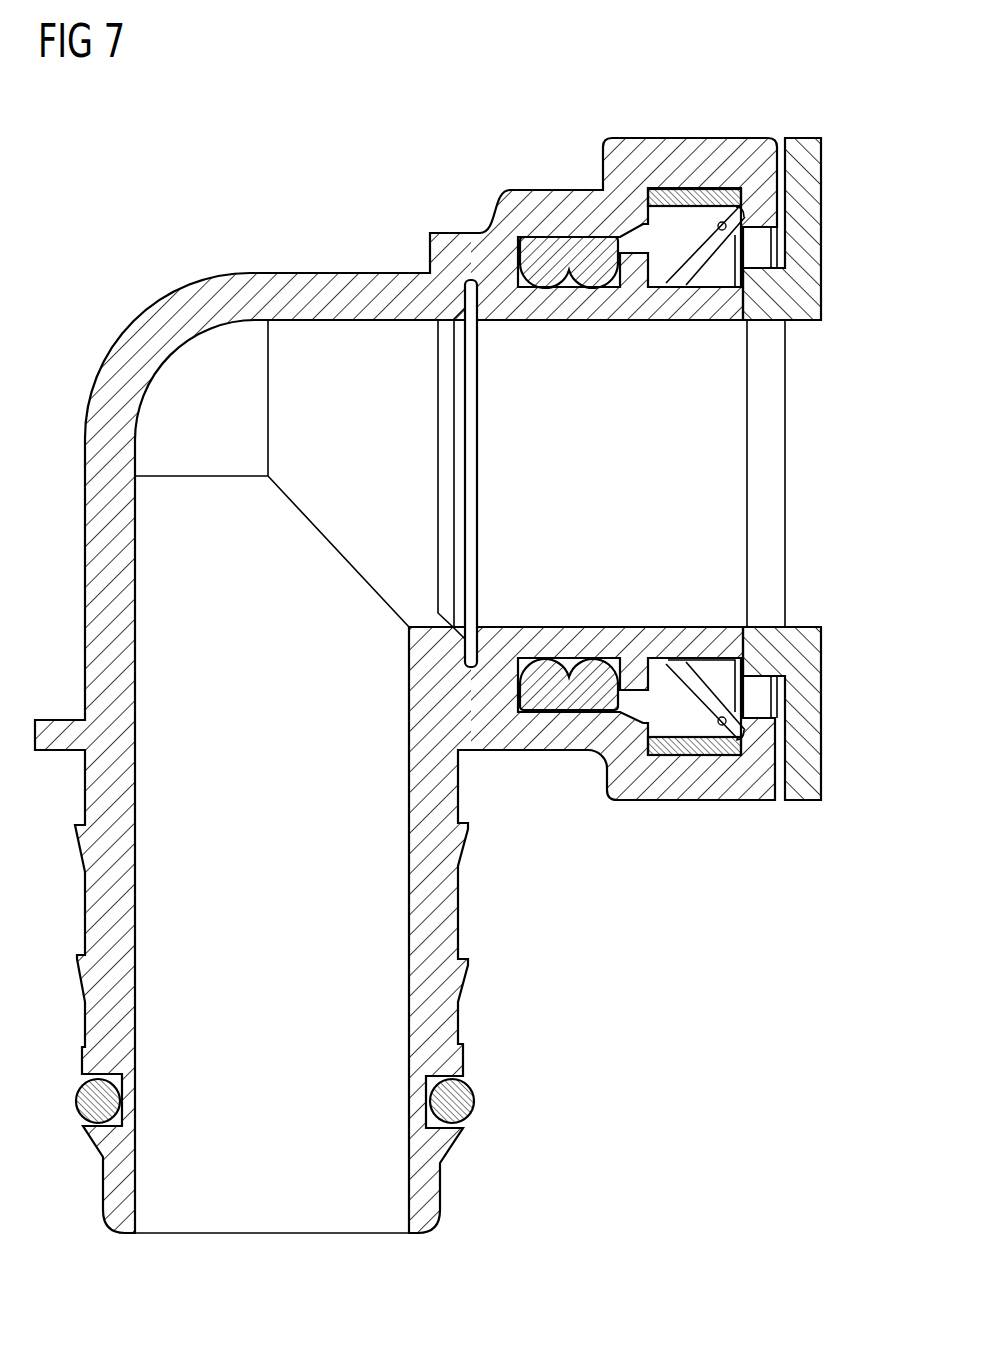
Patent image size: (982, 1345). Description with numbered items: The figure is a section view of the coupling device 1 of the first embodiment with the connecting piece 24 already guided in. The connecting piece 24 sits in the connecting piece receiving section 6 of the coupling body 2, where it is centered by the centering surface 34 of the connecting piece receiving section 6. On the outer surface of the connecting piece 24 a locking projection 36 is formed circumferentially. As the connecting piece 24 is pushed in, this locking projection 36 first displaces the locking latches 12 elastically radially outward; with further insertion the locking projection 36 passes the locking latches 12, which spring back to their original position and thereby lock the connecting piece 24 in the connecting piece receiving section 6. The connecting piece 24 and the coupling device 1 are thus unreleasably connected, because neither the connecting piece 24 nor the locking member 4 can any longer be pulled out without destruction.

The coupling device 1 is at (150, 172).
The coupling body 2 is at (85, 573).
The locking member 4 is at (705, 756).
The connecting piece receiving section 6 is at (777, 119).
The locking latches 12 is at (696, 259).
The connecting piece 24 is at (775, 650).
The centering surface 34 is at (500, 276).
The locking projection 36 is at (640, 284).